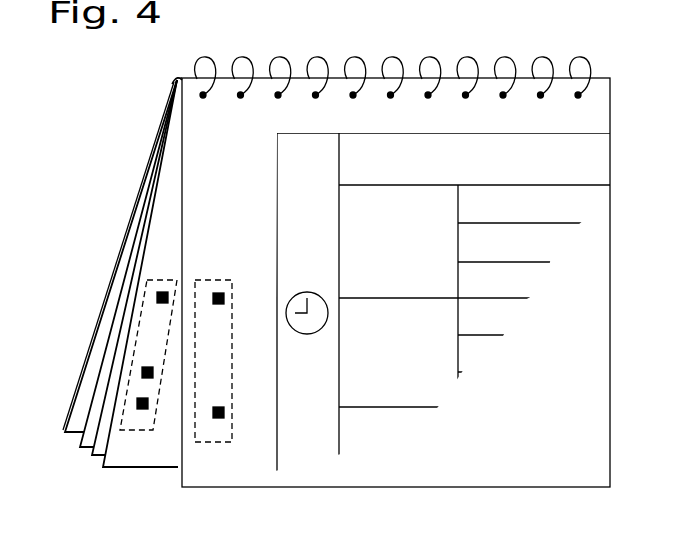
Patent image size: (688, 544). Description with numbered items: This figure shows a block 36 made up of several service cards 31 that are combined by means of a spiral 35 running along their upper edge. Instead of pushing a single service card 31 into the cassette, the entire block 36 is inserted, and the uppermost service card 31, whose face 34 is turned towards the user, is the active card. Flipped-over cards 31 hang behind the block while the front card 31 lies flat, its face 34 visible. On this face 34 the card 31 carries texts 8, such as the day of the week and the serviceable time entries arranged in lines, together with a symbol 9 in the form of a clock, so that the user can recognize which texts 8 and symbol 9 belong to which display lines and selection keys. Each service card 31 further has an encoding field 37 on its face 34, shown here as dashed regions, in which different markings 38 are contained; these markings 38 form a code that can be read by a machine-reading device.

The text 8 is at (346, 160).
The symbol 9 is at (313, 322).
The service card 31 is at (177, 455).
The face 34 is at (120, 452).
The spiral 35 is at (402, 63).
The block 36 is at (566, 522).
The encoding field 37 is at (156, 288).
The marking 38 is at (157, 298).